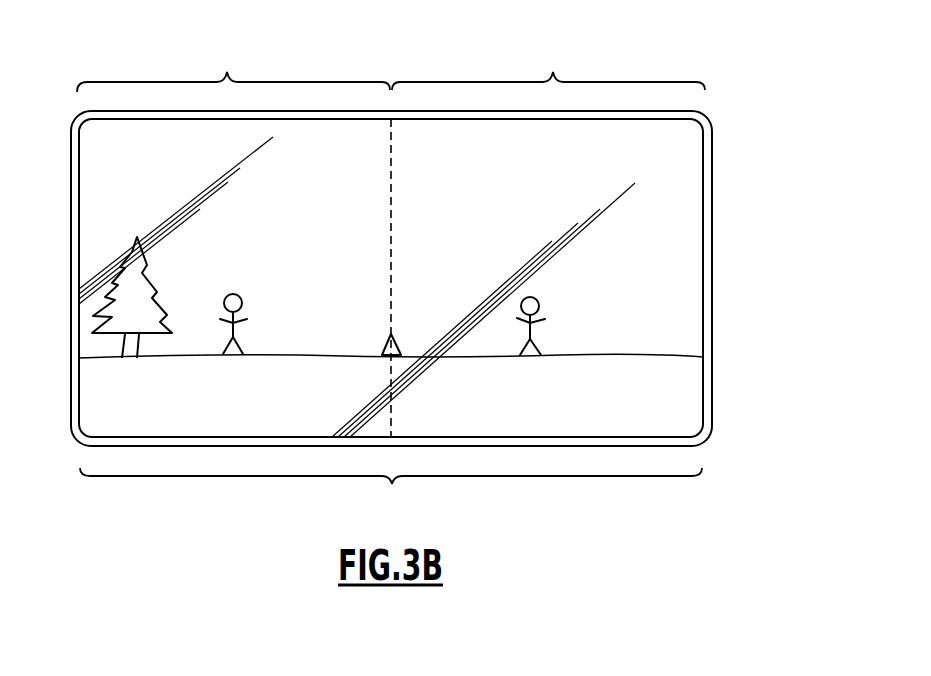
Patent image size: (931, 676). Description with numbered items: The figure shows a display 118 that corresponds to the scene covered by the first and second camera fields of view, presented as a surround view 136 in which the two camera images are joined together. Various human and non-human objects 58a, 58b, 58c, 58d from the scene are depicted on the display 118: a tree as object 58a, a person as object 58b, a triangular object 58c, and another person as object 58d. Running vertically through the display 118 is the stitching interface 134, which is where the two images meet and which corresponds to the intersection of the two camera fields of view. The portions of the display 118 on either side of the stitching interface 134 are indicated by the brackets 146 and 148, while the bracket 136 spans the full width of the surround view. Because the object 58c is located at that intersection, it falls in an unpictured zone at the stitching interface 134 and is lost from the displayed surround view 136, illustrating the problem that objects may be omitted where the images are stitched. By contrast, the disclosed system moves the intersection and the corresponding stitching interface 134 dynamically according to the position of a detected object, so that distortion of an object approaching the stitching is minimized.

The display 118 is at (733, 150).
The stitching interface 134 is at (391, 177).
The surround view 136 is at (391, 492).
The first portion of field of view 146 is at (233, 67).
The second portion of field of view 148 is at (548, 66).
The object 58a is at (150, 265).
The object 58b is at (248, 305).
The object 58c is at (402, 334).
The object 58d is at (534, 331).